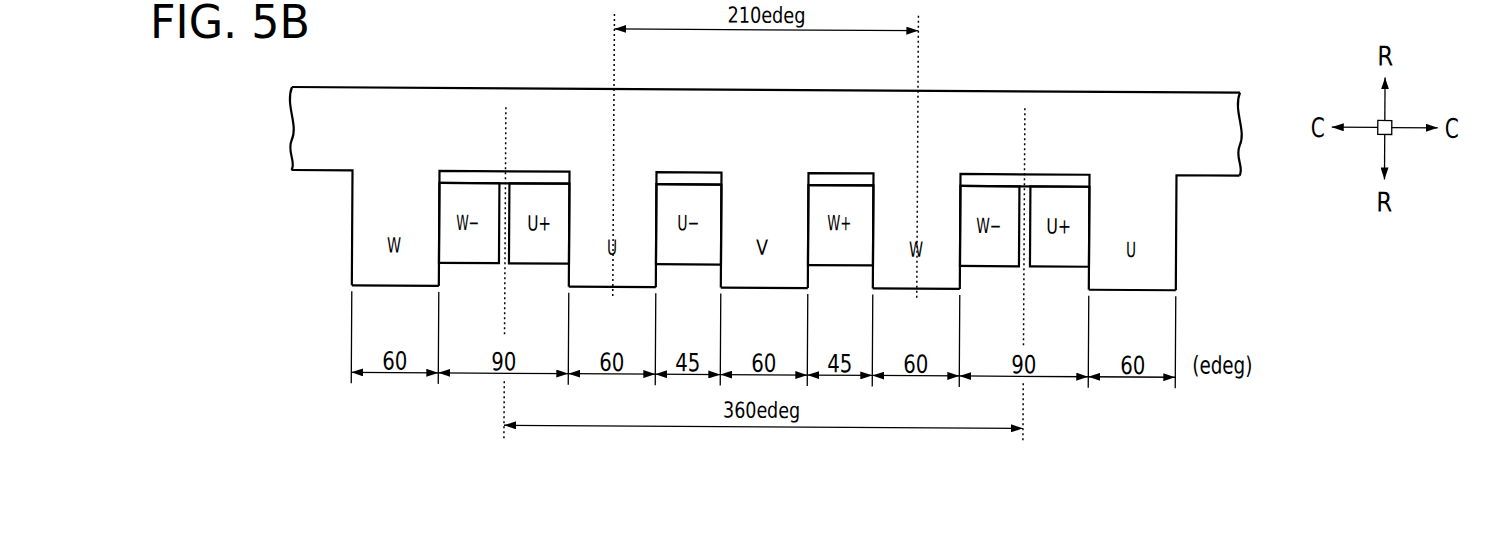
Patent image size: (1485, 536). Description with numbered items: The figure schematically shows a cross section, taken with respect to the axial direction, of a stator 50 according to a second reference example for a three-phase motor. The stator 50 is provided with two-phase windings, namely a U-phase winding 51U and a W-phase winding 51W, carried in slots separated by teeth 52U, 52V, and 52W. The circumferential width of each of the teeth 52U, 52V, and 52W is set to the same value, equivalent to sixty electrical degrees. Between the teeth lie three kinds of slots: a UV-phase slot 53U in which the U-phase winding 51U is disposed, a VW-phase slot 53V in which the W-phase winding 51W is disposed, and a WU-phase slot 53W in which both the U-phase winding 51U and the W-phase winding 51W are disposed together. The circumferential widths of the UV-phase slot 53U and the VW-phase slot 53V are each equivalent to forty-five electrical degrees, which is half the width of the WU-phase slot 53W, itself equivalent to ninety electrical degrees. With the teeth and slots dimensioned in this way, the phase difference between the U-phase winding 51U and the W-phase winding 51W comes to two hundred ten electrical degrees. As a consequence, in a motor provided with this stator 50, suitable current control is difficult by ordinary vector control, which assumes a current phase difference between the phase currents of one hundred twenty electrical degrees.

The stator 50 is at (1136, 54).
The U-phase winding 51U is at (540, 190).
The W-phase winding 51W is at (472, 190).
The tooth 52U is at (598, 276).
The tooth 52V is at (750, 275).
The tooth 52W is at (377, 276).
The UV-phase slot 53U is at (679, 168).
The VW-phase slot 53V is at (838, 168).
The WU-phase slot 53W is at (1026, 168).